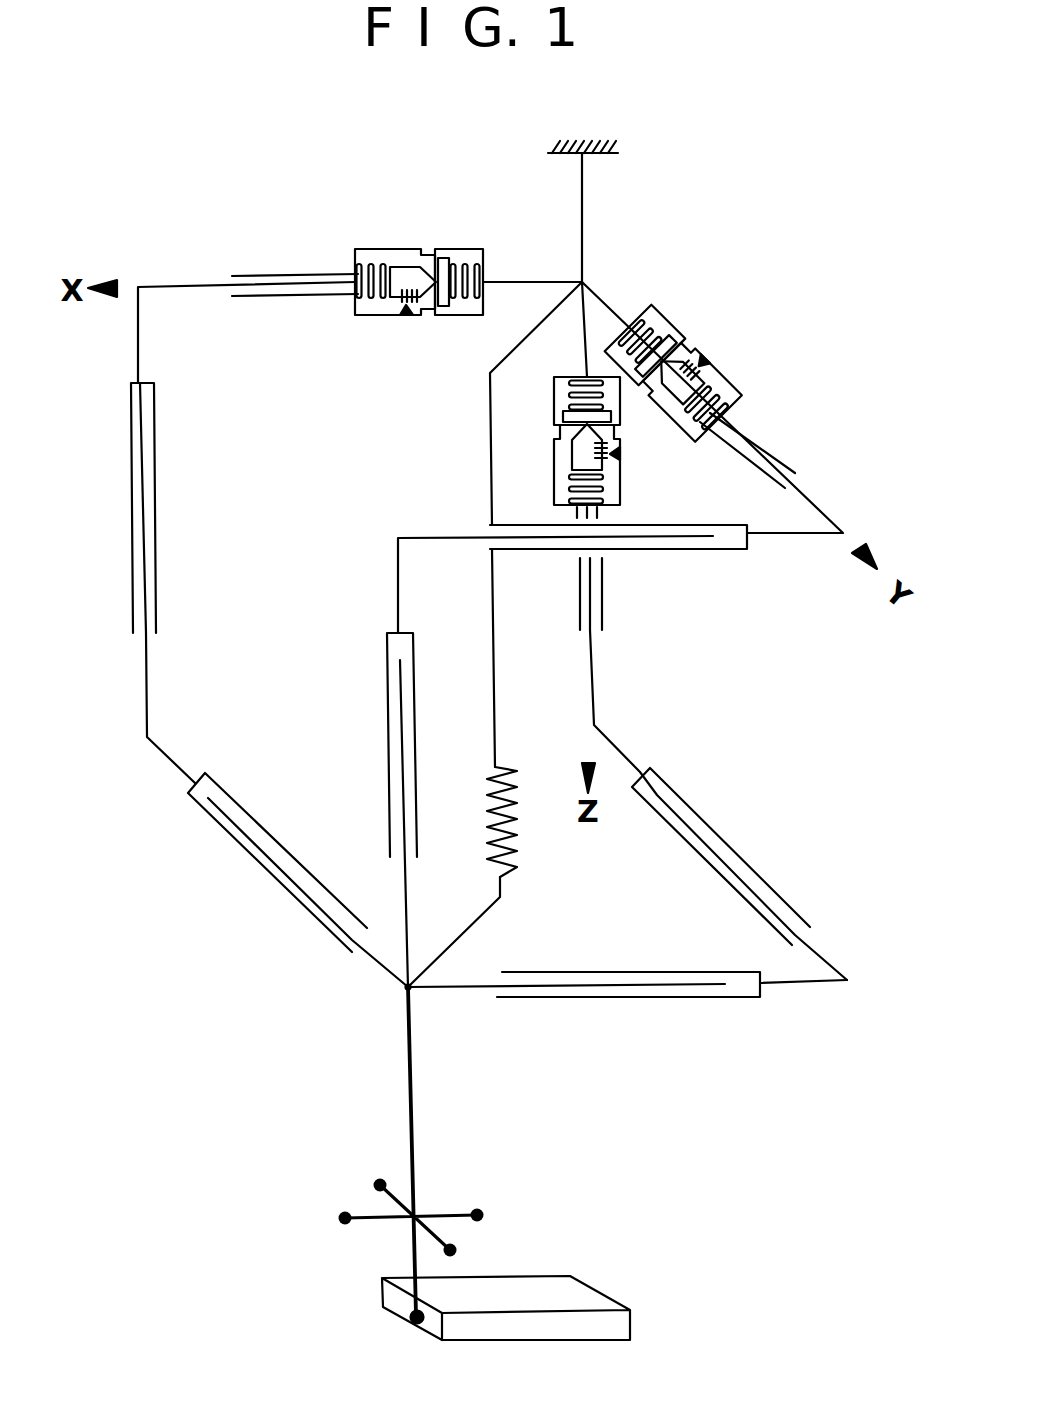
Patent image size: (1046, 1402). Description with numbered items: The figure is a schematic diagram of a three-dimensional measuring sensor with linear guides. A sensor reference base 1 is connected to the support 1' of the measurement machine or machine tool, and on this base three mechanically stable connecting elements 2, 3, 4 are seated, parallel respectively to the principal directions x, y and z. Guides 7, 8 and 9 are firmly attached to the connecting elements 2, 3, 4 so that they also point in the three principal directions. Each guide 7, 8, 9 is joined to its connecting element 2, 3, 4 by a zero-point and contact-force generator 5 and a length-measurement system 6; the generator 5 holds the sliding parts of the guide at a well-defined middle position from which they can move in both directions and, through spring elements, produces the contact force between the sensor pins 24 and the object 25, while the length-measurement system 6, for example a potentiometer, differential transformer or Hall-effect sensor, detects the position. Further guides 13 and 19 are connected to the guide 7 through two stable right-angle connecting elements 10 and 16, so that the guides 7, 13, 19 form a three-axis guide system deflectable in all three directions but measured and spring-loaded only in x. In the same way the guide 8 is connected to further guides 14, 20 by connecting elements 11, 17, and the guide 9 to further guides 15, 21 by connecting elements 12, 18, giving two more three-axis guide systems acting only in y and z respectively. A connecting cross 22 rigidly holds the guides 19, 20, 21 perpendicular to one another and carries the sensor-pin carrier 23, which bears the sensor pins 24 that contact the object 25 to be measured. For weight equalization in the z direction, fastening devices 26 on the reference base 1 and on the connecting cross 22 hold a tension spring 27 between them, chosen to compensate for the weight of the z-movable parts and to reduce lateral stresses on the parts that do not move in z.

The sensor reference base 1 is at (609, 217).
The support 1' is at (619, 124).
The connecting element 2 is at (542, 278).
The connecting element 3 is at (607, 300).
The connecting element 4 is at (580, 342).
The zero-point and contact-force generator 5 is at (458, 257).
The length-measurement system 6 is at (373, 313).
The guide 7 is at (297, 278).
The guide 8 is at (752, 437).
The guide 9 is at (597, 598).
The right-angle mechanical connecting element 10 is at (197, 250).
The connecting element 11 is at (820, 507).
The connecting element 12 is at (595, 713).
The guide 13 is at (140, 498).
The guide 14 is at (677, 543).
The guide 15 is at (703, 828).
The right-angle mechanical connecting element 16 is at (147, 727).
The connecting element 17 is at (397, 578).
The connecting element 18 is at (807, 985).
The guide 19 is at (228, 828).
The guide 20 is at (395, 737).
The guide 21 is at (583, 992).
The connecting cross 22 is at (407, 988).
The sensor-pin carrier 23 is at (408, 1108).
The sensor pin 24 is at (343, 1217).
The object 25 is at (578, 1293).
The fastening device 26 is at (537, 320).
The tension spring 27 is at (513, 843).